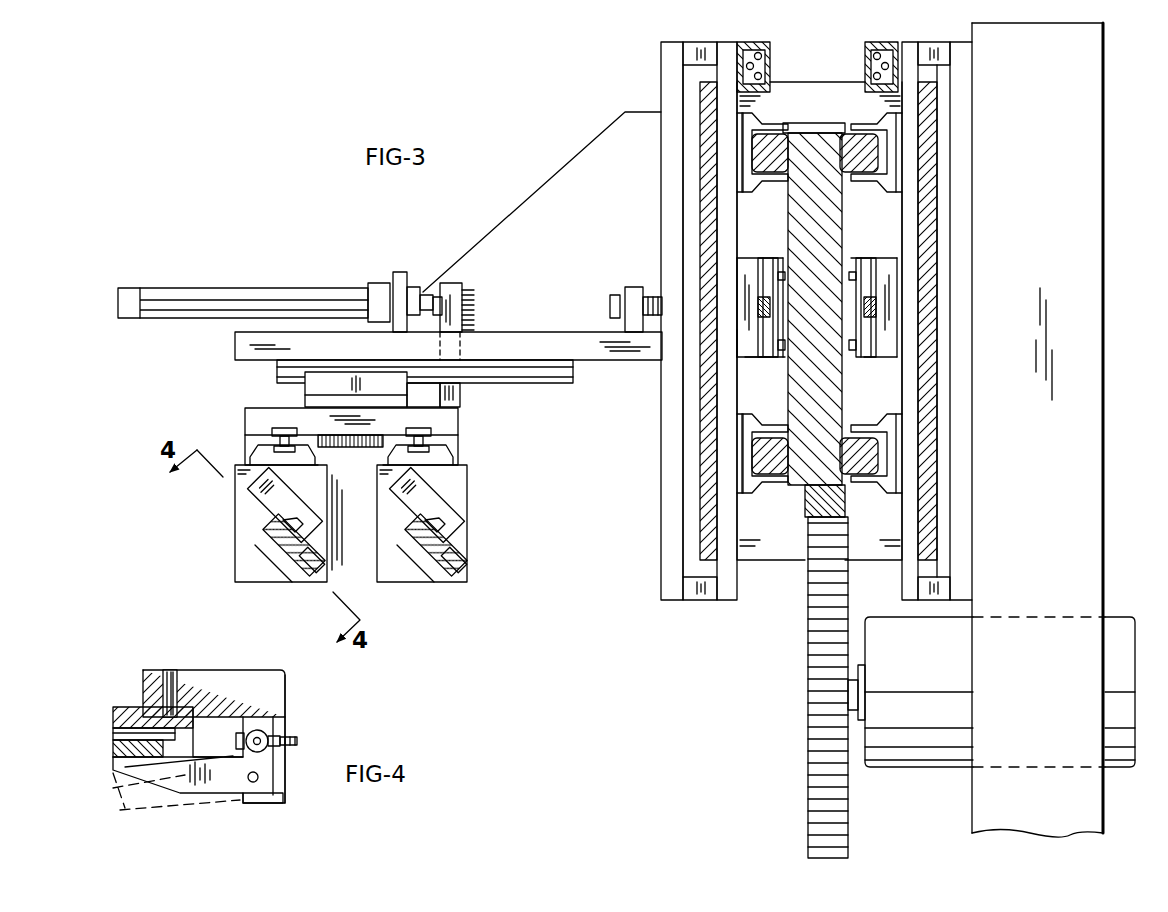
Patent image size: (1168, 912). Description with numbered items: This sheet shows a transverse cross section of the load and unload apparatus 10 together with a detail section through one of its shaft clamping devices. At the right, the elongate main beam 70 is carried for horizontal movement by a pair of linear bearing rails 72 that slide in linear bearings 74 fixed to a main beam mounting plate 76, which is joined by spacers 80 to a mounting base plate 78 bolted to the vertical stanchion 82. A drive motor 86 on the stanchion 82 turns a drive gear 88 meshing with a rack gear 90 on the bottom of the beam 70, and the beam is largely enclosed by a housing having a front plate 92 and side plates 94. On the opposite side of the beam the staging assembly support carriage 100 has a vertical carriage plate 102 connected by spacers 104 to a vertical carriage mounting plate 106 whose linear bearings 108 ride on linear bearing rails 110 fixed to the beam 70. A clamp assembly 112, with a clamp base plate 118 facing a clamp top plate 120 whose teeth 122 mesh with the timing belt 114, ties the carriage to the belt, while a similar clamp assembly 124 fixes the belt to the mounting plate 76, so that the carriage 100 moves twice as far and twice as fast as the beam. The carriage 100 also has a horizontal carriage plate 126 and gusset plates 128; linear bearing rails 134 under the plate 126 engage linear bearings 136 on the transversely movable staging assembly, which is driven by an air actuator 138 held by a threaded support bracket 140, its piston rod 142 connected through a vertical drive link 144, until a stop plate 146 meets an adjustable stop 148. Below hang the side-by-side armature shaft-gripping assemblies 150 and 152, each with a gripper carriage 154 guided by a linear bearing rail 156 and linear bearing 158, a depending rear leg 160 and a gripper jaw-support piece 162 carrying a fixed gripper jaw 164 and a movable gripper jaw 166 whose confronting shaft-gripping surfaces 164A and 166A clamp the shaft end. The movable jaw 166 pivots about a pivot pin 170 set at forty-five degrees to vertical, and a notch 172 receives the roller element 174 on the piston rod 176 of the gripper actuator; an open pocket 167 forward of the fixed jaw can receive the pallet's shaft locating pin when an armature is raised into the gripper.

In FIG. 3, the load and unload apparatus 10 is at (566, 118).
In FIG. 3, the main beam 70 is at (810, 122).
In FIG. 3, the linear bearing rails 72 is at (860, 130).
In FIG. 3, the linear bearings 74 is at (900, 175).
In FIG. 3, the main beam mounting plate 76 is at (912, 140).
In FIG. 3, the mounting base plate 78 is at (962, 98).
In FIG. 3, the spacers 80 is at (945, 52).
In FIG. 3, the vertical stanchion 82 is at (1105, 410).
In FIG. 3, the drive motor 86 is at (1128, 632).
In FIG. 3, the drive gear 88 is at (810, 673).
In FIG. 3, the rack gear 90 is at (808, 512).
In FIG. 3, the front plate 92 is at (786, 88).
In FIG. 3, the side plates 94 is at (706, 190).
In FIG. 3, the staging assembly support carriage 100 is at (553, 168).
In FIG. 3, the vertical carriage plate 102 is at (664, 540).
In FIG. 3, the spacers 104 is at (690, 52).
In FIG. 3, the vertical carriage mounting plate 106 is at (727, 600).
In FIG. 3, the linear bearings 108 is at (743, 142).
In FIG. 3, the linear bearing rails 110 is at (757, 162).
In FIG. 3, the clamp assembly 112 is at (745, 362).
In FIG. 3, the timing belt 114 is at (750, 272).
In FIG. 3, the clamp base plate 118 is at (740, 268).
In FIG. 3, the clamp top plate 120 is at (772, 358).
In FIG. 3, the teeth 122 is at (783, 268).
In FIG. 3, the clamp assembly 124 is at (905, 318).
In FIG. 3, the horizontal carriage plate 126 is at (583, 345).
In FIG. 3, the gusset plates 128 is at (531, 200).
In FIG. 3, the linear bearing rails 134 is at (515, 368).
In FIG. 3, the linear bearings 136 is at (348, 382).
In FIG. 3, the air actuator 138 is at (200, 292).
In FIG. 3, the threaded support bracket 140 is at (396, 275).
In FIG. 3, the piston rod 142 is at (413, 287).
In FIG. 3, the vertical drive link 144 is at (452, 292).
In FIG. 3, the stop plate 146 is at (463, 292).
In FIG. 3, the adjustable stop 148 is at (612, 298).
In FIG. 3, the armature shaft-gripping assembly 150 is at (228, 583).
In FIG. 4, the armature shaft-gripping assembly 150 is at (290, 700).
In FIG. 3, the armature shaft-gripping assembly 152 is at (465, 588).
In FIG. 3, the gripper carriage 154 is at (246, 440).
In FIG. 3, the linear bearing rail 156 is at (282, 430).
In FIG. 3, the linear bearing 158 is at (312, 450).
In FIG. 3, the depending rear leg 160 is at (248, 583).
In FIG. 4, the gripper jaw-support piece 162 is at (243, 672).
In FIG. 3, the fixed gripper jaw 164 is at (306, 490).
In FIG. 4, the fixed gripper jaw 164 is at (143, 708).
In FIG. 3, the shaft-gripping surfaces 164A is at (245, 543).
In FIG. 4, the shaft-gripping surfaces 164A is at (113, 730).
In FIG. 3, the movable gripper jaw 166 is at (237, 565).
In FIG. 4, the movable gripper jaw 166 is at (120, 810).
In FIG. 3, the shaft-gripping surface 166A is at (458, 548).
In FIG. 4, the shaft-gripping surface 166A is at (113, 748).
In FIG. 4, the open pocket 167 is at (230, 738).
In FIG. 3, the pivot pin 170 is at (292, 583).
In FIG. 4, the pivot pin 170 is at (283, 797).
In FIG. 4, the notch 172 is at (264, 751).
In FIG. 4, the roller element 174 is at (258, 736).
In FIG. 4, the piston rod 176 is at (298, 741).